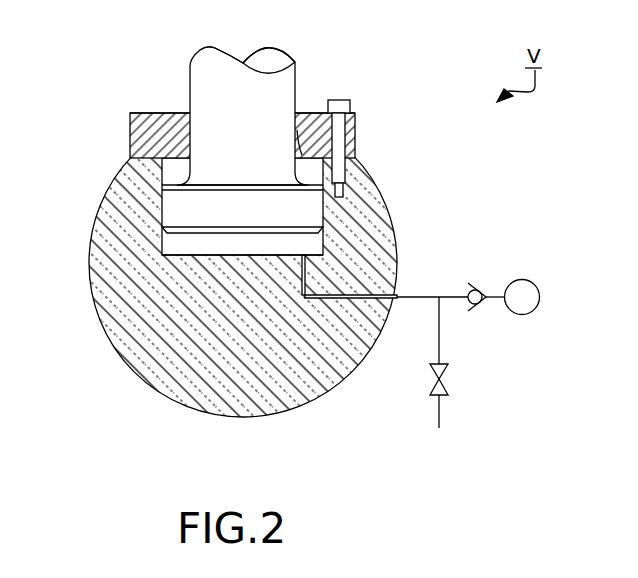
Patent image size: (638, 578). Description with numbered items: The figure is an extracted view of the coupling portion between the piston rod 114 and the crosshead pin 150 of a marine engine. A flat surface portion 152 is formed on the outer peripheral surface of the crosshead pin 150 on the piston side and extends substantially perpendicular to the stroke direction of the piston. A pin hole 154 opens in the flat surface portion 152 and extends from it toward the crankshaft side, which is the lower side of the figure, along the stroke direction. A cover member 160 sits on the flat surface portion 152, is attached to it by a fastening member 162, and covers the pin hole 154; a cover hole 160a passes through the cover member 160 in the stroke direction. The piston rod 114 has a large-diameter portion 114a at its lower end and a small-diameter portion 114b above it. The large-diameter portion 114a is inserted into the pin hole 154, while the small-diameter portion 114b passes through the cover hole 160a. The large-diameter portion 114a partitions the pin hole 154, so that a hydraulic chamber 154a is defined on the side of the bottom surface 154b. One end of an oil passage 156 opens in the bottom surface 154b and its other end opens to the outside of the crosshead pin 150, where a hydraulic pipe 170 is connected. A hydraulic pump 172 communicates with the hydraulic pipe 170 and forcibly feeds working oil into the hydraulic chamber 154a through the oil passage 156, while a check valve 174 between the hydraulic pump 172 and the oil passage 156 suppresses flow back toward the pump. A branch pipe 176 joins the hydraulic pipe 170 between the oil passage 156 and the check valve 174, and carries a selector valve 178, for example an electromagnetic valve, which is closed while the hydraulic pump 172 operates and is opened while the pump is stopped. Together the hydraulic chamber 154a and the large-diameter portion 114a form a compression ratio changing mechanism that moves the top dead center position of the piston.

The piston rod 114 is at (190, 67).
The large-diameter portion 114a is at (180, 207).
The small-diameter portion 114b is at (228, 83).
The crosshead pin 150 is at (97, 313).
The flat surface portion 152 is at (130, 142).
The pin hole 154 is at (163, 240).
The hydraulic chamber 154a is at (250, 247).
The bottom surface 154b is at (198, 250).
The oil passage 156 is at (323, 297).
The cover member 160 is at (130, 113).
The cover hole 160a is at (290, 137).
The fastening member 162 is at (342, 99).
The hydraulic pipe 170 is at (425, 296).
The hydraulic pump 172 is at (524, 279).
The check valve 174 is at (482, 285).
The branch pipe 176 is at (440, 335).
The selector valve 178 is at (430, 395).